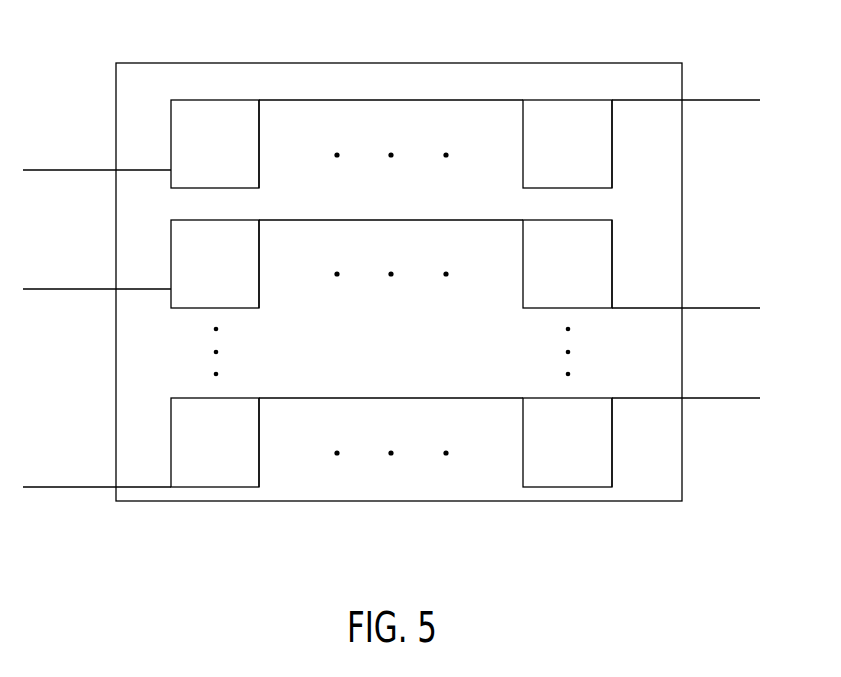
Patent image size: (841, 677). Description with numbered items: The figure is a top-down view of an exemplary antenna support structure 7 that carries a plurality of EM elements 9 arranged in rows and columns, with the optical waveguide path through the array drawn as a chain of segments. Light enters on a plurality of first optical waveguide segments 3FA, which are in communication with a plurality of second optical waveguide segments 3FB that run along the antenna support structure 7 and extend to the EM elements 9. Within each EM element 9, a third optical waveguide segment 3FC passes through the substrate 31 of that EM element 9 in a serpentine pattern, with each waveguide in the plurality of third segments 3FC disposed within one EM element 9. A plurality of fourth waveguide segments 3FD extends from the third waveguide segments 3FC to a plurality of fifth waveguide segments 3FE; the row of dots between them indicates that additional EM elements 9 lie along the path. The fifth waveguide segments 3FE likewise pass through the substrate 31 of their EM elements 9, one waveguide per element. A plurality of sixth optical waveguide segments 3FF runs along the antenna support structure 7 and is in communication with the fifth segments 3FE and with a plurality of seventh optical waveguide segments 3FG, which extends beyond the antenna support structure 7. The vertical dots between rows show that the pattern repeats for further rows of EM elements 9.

The antenna support structure 7 is at (133, 70).
The substrate 31 is at (180, 127).
The EM element 9 is at (262, 145).
The first optical waveguide segment 3FA is at (69, 317).
The second optical waveguide segment 3FB is at (143, 317).
The third optical waveguide segment 3FC is at (215, 294).
The fourth waveguide segment 3FD is at (391, 267).
The fifth waveguide segment 3FE is at (567, 294).
The sixth optical waveguide segment 3FF is at (647, 239).
The seventh optical waveguide segment 3FG is at (721, 239).